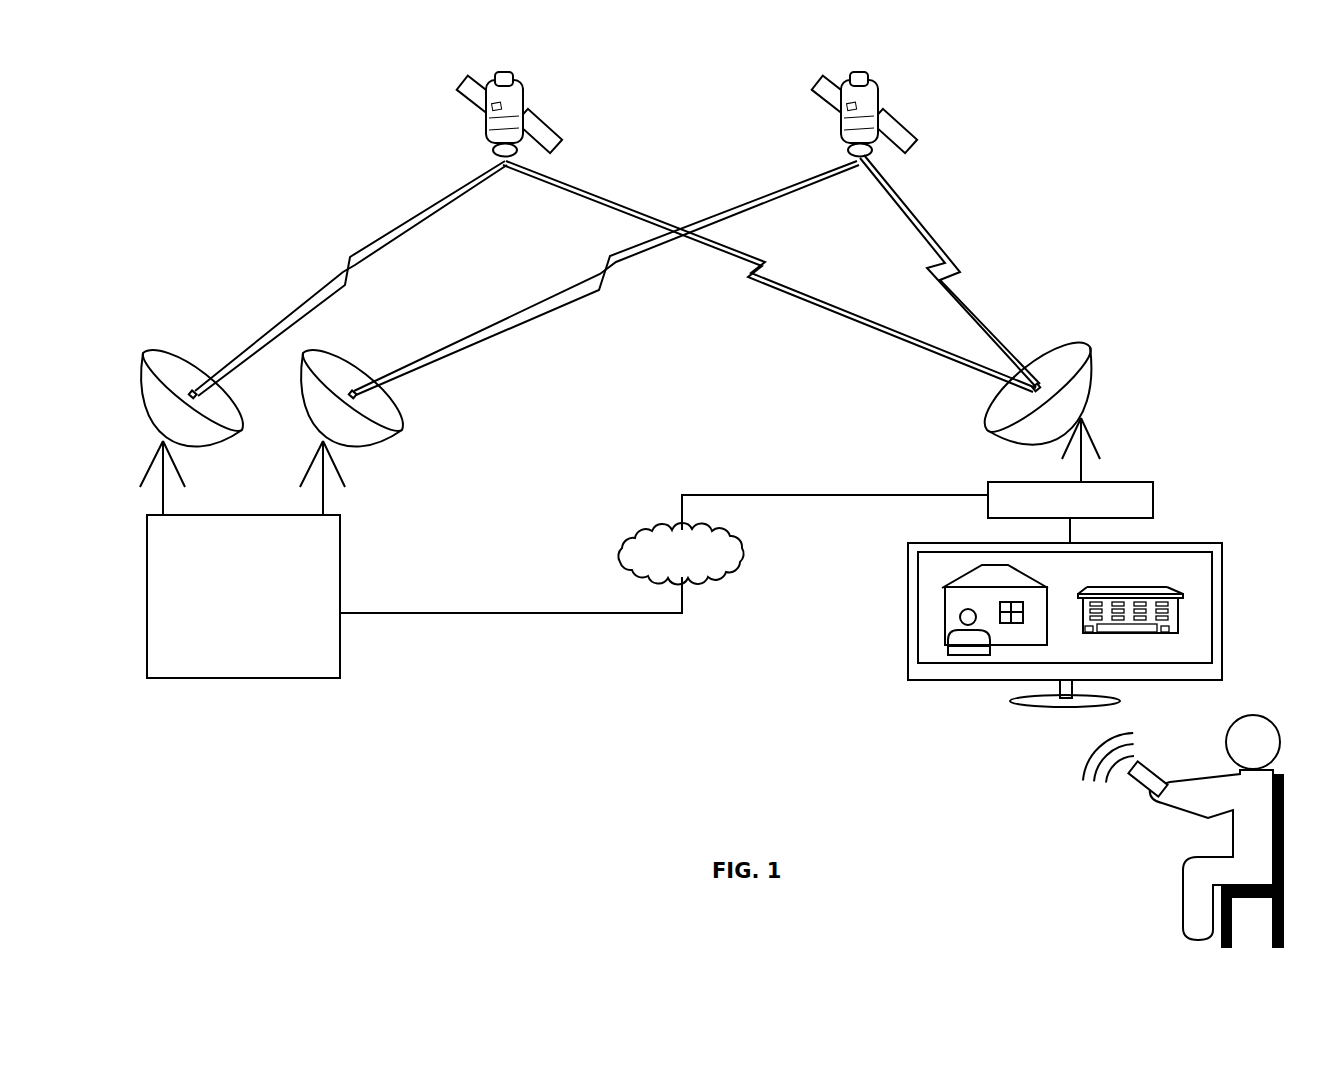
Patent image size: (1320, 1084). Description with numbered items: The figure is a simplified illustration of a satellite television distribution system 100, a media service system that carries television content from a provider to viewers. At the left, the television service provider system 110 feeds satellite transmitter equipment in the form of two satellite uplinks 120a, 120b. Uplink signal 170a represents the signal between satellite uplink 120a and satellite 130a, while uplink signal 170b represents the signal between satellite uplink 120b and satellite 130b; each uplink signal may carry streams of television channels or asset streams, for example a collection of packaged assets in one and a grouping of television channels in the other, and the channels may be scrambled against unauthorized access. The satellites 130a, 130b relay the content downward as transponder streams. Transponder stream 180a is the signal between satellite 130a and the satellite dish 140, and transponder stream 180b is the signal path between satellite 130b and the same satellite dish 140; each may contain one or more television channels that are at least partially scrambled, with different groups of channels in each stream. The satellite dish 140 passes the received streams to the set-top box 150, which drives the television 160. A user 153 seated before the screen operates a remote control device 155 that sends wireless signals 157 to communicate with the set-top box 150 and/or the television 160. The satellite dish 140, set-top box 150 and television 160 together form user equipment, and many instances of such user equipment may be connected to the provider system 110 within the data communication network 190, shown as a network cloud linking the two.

The satellite television distribution system 100 is at (205, 134).
The television service provider system 110 is at (330, 678).
The satellite uplink 120a is at (162, 353).
The satellite uplink 120b is at (332, 353).
The satellite 130a is at (554, 126).
The satellite 130b is at (914, 126).
The satellite dish 140 is at (1068, 346).
The set-top box (STB) 150 is at (1132, 478).
The user 153 is at (1264, 714).
The remote control device 155 is at (1130, 792).
The wireless signals 157 is at (1088, 778).
The television 160 is at (1192, 540).
The uplink signal 170a is at (458, 180).
The uplink signal 170b is at (758, 196).
The transponder stream 180a is at (666, 206).
The transponder stream 180b is at (944, 230).
The data communication network 190 is at (626, 534).